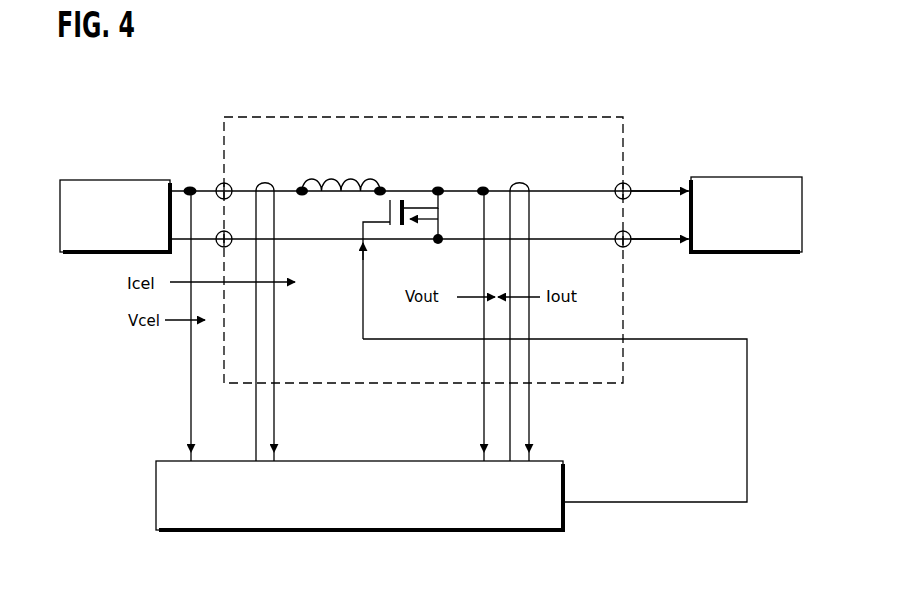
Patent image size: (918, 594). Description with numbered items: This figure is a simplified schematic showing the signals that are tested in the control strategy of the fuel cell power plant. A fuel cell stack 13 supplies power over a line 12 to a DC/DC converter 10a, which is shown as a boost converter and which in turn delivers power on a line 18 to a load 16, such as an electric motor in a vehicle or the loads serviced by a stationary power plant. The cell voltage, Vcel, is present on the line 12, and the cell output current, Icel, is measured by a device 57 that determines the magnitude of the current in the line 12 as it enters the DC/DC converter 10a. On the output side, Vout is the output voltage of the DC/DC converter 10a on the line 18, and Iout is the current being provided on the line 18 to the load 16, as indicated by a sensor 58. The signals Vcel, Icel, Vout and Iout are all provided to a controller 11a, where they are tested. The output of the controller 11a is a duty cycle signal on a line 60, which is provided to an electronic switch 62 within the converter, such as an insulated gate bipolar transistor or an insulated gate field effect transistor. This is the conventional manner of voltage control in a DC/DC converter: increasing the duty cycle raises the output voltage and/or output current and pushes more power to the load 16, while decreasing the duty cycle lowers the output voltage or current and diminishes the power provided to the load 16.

The DC/DC converter 10a is at (408, 117).
The controller 11a is at (154, 484).
The line 12 is at (203, 188).
The fuel cell stack 13 is at (130, 180).
The load 16 is at (729, 177).
The line 18 is at (652, 189).
The device 57 is at (268, 183).
The sensor 58 is at (520, 183).
The line 60 is at (748, 380).
The electronic switch 62 is at (390, 212).